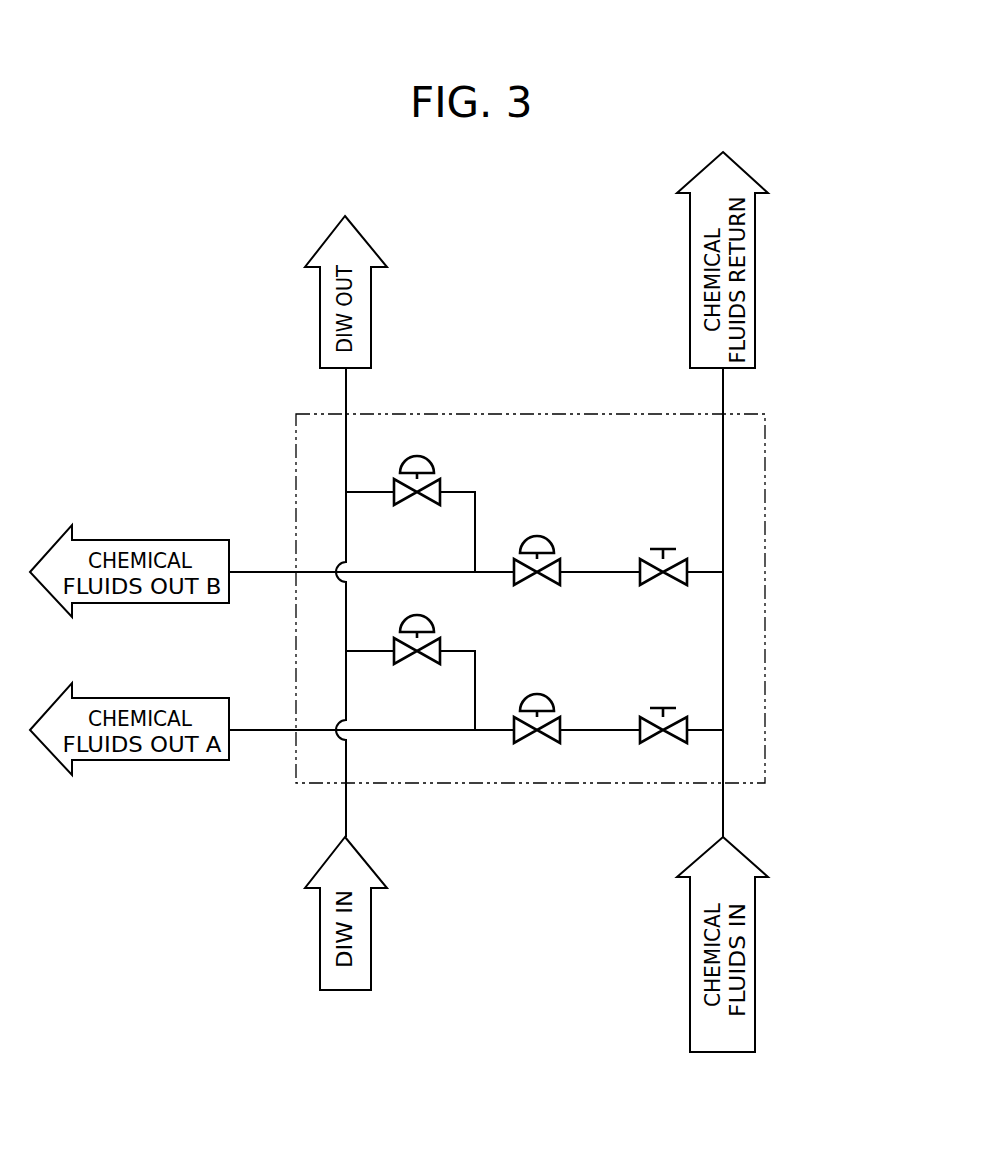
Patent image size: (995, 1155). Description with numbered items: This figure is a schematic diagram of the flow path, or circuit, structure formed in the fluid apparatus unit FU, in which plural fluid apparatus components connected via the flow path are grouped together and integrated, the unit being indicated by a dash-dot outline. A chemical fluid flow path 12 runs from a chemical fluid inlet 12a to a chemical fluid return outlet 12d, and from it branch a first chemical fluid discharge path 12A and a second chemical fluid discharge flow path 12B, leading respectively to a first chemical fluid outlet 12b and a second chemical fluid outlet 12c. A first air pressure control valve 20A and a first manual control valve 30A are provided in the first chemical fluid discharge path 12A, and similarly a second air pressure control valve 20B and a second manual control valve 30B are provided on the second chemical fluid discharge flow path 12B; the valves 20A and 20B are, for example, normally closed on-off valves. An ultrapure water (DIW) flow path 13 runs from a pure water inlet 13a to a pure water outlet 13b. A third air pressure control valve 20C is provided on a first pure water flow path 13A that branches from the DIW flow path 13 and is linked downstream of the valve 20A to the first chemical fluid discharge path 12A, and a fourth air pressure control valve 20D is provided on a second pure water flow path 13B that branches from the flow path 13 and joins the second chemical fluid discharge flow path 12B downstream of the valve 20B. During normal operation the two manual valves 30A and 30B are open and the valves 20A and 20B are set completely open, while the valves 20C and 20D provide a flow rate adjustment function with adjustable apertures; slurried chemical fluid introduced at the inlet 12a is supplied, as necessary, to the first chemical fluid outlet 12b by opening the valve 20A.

The fluid apparatus unit FU is at (767, 490).
The chemical fluid flow path 12 is at (723, 627).
The chemical fluid inlet 12a is at (723, 785).
The first chemical fluid outlet 12b is at (296, 732).
The second chemical fluid outlet 12c is at (296, 571).
The chemical fluid return outlet 12d is at (723, 414).
The first chemical fluid discharge path 12A is at (600, 733).
The second chemical fluid discharge flow path 12B is at (607, 574).
The ultrapure water (DIW) flow path 13 is at (348, 758).
The pure water inlet 13a is at (346, 785).
The pure water outlet 13b is at (346, 414).
The first pure water flow path 13A is at (475, 652).
The second pure water flow path 13B is at (475, 492).
The first air pressure control valve 20A is at (562, 718).
The second air pressure control valve 20B is at (562, 560).
The third air pressure control valve 20C is at (428, 619).
The fourth air pressure control valve 20D is at (426, 461).
The first manual control valve 30A is at (684, 717).
The second manual control valve 30B is at (684, 559).